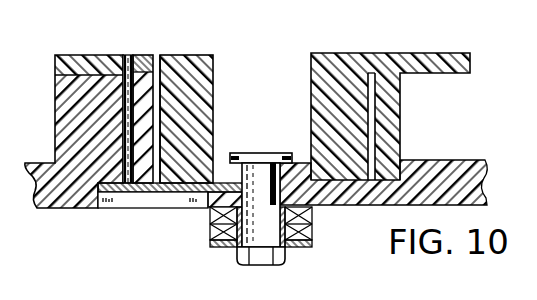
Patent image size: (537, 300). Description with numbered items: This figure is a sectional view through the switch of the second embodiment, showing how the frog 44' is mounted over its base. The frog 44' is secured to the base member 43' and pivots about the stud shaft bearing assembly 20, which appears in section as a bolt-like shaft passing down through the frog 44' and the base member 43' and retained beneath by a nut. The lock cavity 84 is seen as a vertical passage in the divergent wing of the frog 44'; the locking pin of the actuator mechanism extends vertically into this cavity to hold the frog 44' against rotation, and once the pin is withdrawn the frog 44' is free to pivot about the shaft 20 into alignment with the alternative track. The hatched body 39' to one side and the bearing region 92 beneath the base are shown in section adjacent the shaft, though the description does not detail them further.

The lock cavity 84 is at (129, 56).
The frog 44' is at (199, 99).
The housing assembly 39' is at (355, 116).
The base member 43' is at (153, 220).
The stud shaft bearing assembly 20 is at (215, 231).
The base member 92 is at (310, 198).